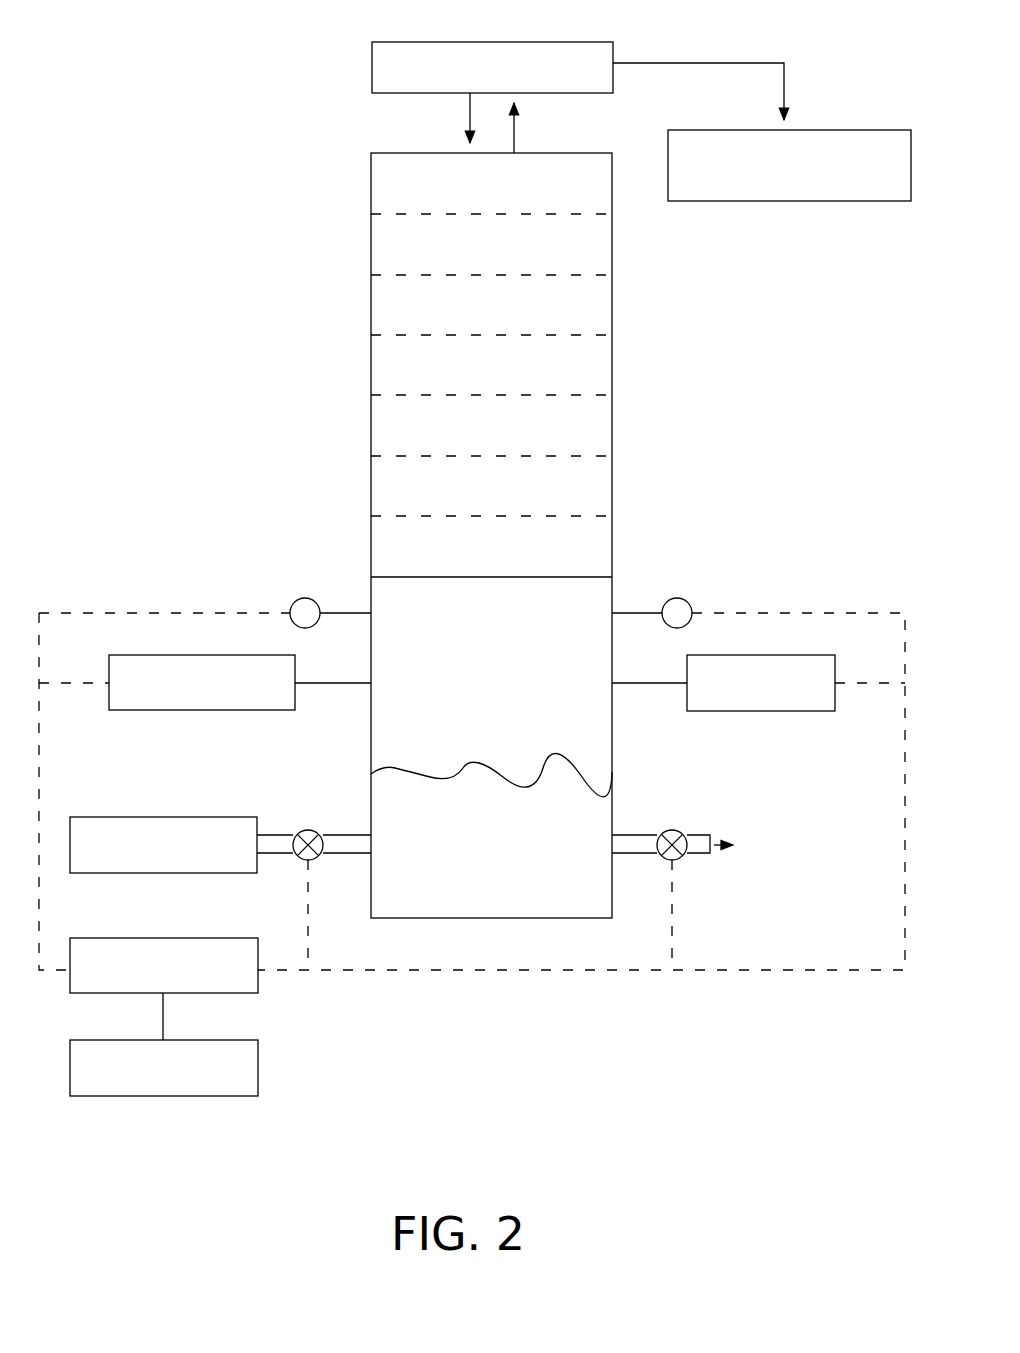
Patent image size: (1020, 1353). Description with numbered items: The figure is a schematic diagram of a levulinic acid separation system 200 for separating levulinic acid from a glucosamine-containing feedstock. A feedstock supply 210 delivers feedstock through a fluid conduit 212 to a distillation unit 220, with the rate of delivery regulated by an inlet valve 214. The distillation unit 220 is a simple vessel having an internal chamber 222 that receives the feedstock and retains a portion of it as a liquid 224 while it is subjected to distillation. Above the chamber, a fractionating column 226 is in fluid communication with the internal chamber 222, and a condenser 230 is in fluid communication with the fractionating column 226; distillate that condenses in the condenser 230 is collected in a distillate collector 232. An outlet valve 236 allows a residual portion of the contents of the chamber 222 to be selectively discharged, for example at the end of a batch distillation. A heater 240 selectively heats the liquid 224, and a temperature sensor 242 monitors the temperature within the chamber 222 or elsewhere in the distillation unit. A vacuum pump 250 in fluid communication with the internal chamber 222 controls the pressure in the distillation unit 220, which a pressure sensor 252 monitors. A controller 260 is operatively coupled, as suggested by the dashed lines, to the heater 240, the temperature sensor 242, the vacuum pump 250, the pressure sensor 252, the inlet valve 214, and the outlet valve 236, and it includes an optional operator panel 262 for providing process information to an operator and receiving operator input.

The levulinic acid separation system 200 is at (250, 168).
The feedstock supply 210 is at (183, 817).
The fluid conduit 212 is at (280, 846).
The inlet valve 214 is at (307, 830).
The distillation unit 220 is at (622, 489).
The internal chamber 222 is at (530, 695).
The liquid 224 is at (563, 772).
The fractionating column 226 is at (390, 308).
The condenser 230 is at (485, 42).
The distillate collector 232 is at (792, 201).
The outlet valve 236 is at (674, 828).
The heater 240 is at (761, 711).
The temperature sensor 242 is at (687, 599).
The vacuum pump 250 is at (202, 710).
The pressure sensor 252 is at (295, 602).
The controller 260 is at (225, 993).
The operator panel 262 is at (216, 1096).